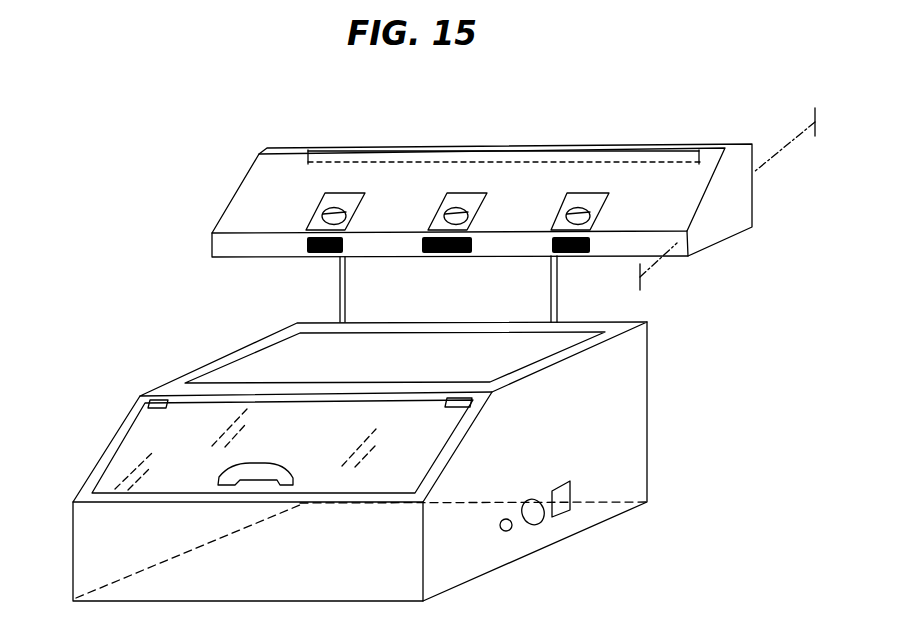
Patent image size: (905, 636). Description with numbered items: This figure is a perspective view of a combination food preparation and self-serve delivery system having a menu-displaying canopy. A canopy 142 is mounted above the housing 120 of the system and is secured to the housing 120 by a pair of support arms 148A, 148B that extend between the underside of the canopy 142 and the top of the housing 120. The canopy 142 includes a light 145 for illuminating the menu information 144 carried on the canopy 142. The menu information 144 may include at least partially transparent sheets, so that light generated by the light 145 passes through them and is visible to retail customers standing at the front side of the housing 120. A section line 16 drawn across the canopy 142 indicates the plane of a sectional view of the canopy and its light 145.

The housing 120 is at (664, 354).
The canopy 142 is at (466, 177).
The menu information 144 is at (343, 192).
The light 145 is at (522, 161).
The support arm 148A is at (358, 291).
The support arm 148B is at (540, 291).
The section line 16- 16 is at (640, 277).